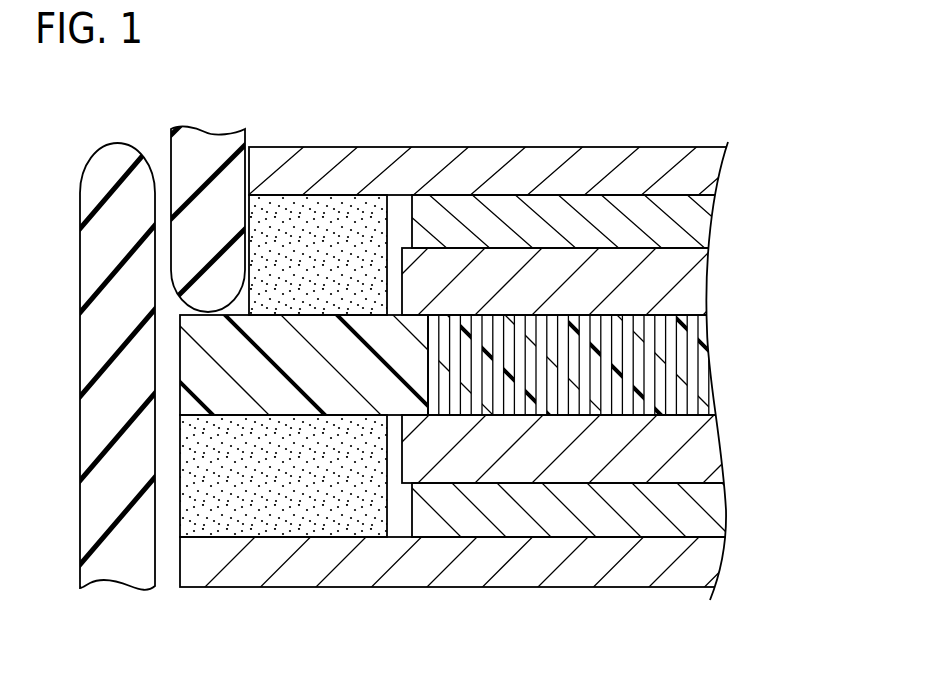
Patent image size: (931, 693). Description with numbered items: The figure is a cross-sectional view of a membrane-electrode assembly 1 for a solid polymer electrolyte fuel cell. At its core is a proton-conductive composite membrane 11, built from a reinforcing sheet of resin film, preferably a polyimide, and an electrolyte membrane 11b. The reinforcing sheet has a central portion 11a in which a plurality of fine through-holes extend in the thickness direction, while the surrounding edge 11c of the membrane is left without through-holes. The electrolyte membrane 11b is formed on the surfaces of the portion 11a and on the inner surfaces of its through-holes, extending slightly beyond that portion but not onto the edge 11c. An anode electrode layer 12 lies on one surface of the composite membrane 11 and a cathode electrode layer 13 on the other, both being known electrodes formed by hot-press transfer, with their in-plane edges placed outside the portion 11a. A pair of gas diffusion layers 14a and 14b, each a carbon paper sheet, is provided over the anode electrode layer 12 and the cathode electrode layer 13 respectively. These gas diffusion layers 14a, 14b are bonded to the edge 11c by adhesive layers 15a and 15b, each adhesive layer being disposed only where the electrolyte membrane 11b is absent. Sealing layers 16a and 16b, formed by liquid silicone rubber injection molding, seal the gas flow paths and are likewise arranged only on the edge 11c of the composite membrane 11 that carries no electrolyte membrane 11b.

The membrane-electrode assembly 1 is at (655, 94).
The proton-conductive composite membrane 11 is at (427, 365).
The portion in which through-holes are provided 11a is at (690, 361).
The electrolyte membrane 11b is at (697, 282).
The edge of the proton-conductive composite membrane 11c is at (202, 362).
The anode electrode layer 12 is at (697, 220).
The cathode electrode layer 13 is at (700, 507).
The gas diffusion layer 14a is at (697, 176).
The gas diffusion layer 14b is at (697, 560).
The adhesive layer 15a is at (313, 215).
The adhesive layer 15b is at (297, 523).
The sealing layer 16a is at (206, 158).
The sealing layer 16b is at (115, 437).